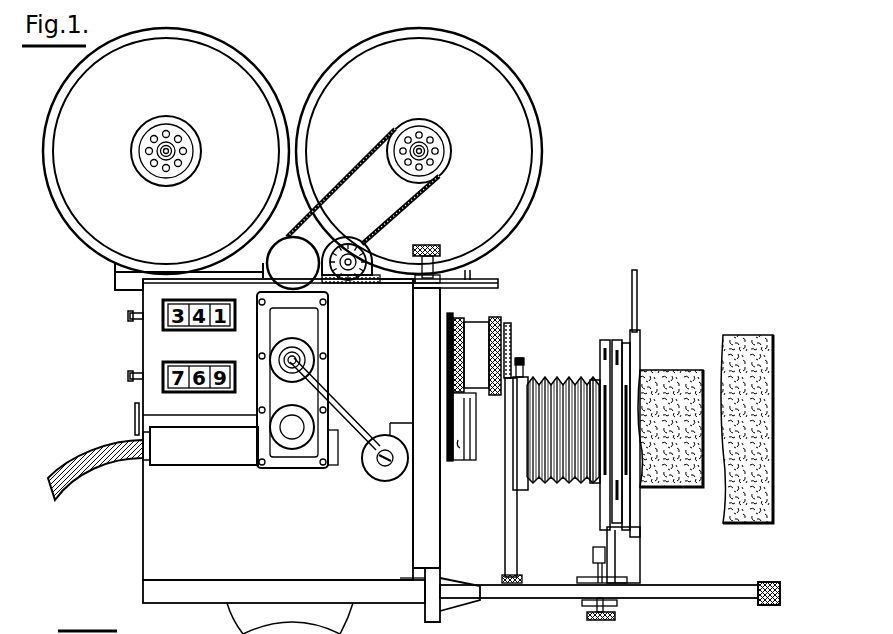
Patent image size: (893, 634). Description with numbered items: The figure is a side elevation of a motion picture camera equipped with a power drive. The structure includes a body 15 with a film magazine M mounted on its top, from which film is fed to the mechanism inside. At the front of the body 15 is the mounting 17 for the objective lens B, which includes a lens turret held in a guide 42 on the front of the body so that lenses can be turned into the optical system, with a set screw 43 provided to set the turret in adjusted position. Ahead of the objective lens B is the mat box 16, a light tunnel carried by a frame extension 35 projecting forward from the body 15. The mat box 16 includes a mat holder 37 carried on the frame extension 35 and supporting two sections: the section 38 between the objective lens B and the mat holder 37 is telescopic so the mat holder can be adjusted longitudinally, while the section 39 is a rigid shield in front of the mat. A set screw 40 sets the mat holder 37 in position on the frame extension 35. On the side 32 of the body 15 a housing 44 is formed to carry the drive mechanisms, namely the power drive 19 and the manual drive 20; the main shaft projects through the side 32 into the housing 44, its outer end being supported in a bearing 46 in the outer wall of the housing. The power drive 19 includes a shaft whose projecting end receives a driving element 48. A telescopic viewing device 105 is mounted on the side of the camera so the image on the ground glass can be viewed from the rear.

The magazine M is at (419, 151).
The objective lens B is at (455, 438).
The body 15 is at (168, 548).
The mat box 16 is at (556, 377).
The mounting 17 is at (444, 305).
The power drive 19 is at (240, 452).
The manual drive 20 is at (362, 430).
The side 32 is at (241, 588).
The frame extension 35 is at (556, 595).
The mat holder 37 is at (626, 376).
The section of mat box 38 is at (563, 478).
The section of mat box 39 is at (680, 487).
The set screw 40 is at (619, 617).
The guide 42 is at (414, 553).
The set screw 43 is at (433, 248).
The housing 44 is at (310, 328).
The bearing 46 is at (291, 431).
The driving element 48 is at (118, 462).
The telescopic viewing device 105 is at (136, 431).